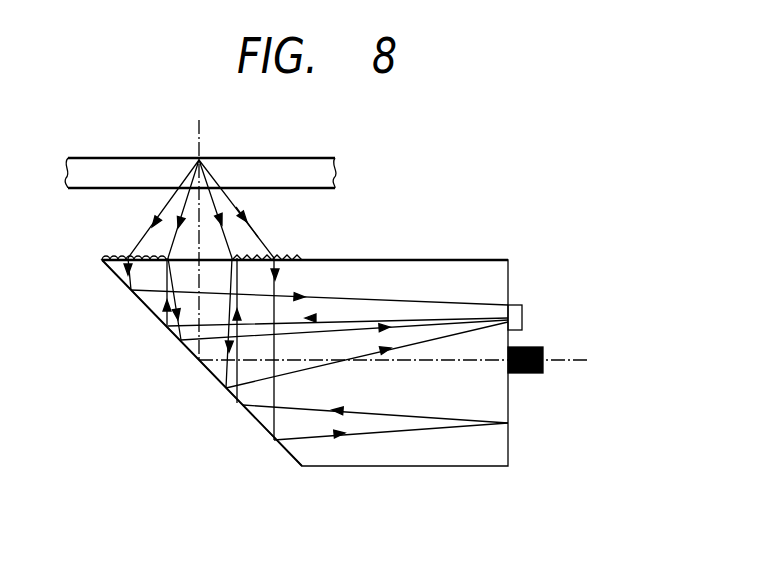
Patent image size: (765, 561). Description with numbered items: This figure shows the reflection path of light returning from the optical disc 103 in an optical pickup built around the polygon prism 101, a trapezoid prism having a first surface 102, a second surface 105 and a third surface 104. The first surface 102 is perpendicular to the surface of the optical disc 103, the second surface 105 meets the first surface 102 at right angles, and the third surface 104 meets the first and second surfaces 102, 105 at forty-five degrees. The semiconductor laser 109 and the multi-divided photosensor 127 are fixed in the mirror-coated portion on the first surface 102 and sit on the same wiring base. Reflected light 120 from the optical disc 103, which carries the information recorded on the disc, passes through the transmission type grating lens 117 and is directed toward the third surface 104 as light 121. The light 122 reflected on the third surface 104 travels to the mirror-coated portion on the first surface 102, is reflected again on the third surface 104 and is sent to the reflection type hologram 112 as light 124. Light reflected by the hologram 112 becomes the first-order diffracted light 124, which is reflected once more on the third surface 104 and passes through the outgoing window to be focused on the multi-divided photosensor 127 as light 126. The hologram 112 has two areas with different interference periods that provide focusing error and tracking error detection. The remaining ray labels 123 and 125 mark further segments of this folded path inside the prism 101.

The polygon prism 101 is at (341, 317).
The first surface 102 is at (508, 447).
The optical disc 103 is at (308, 170).
The third surface 104 is at (177, 367).
The second surface 105 is at (407, 260).
The semiconductor laser 109 is at (535, 347).
The reflection type hologram 112 is at (252, 220).
The transmission type grating lens 117 is at (298, 257).
The reflected light 120 is at (182, 212).
The light directed toward third surface 121 is at (255, 418).
The light reflected on third surface 122 is at (338, 292).
The light beam returning from mirror 123 is at (413, 306).
The first-order diffracted light 124 is at (235, 370).
The light beam entering block 125 is at (228, 348).
The light focused on photosensor 126 is at (405, 327).
The multi-divided photosensor 127 is at (520, 305).